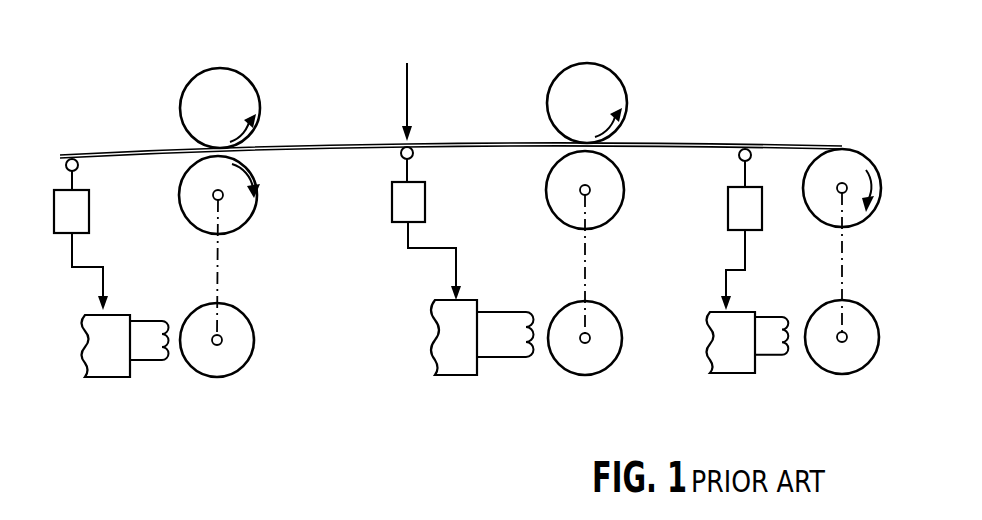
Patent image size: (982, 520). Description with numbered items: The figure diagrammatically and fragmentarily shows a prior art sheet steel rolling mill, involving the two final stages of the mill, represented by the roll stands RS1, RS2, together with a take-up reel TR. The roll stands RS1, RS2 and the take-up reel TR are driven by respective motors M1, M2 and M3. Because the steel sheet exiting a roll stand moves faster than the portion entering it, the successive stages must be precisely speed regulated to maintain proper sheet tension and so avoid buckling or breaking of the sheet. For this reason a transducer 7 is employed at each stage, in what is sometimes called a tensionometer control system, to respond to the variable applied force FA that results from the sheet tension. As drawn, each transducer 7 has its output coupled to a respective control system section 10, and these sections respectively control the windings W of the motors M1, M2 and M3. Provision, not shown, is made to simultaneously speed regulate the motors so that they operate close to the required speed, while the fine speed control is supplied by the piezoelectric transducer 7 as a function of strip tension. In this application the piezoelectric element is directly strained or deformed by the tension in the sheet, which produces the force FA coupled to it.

The transducer 7 is at (84, 212).
The control system section 10 is at (110, 314).
The windings W is at (160, 360).
The roll stand RS1 is at (240, 83).
The roll stand RS2 is at (610, 83).
The take-up reel TR is at (860, 152).
The applied force FA is at (425, 83).
The motor M1 is at (217, 307).
The motor M2 is at (585, 304).
The motor M3 is at (842, 303).